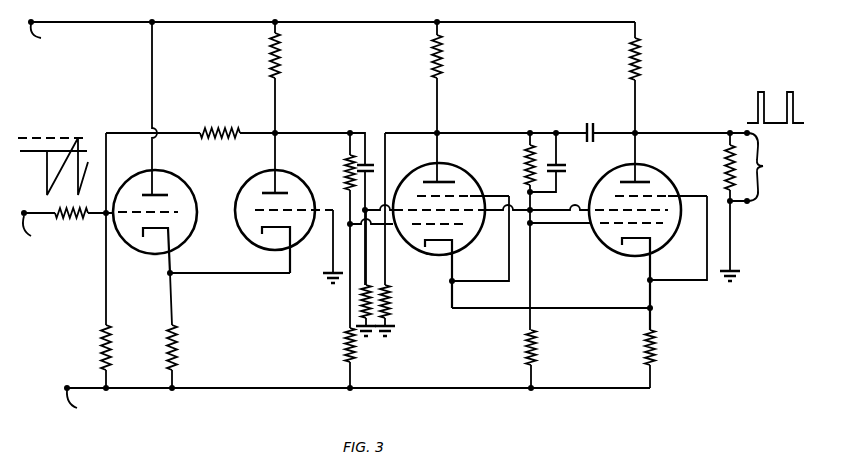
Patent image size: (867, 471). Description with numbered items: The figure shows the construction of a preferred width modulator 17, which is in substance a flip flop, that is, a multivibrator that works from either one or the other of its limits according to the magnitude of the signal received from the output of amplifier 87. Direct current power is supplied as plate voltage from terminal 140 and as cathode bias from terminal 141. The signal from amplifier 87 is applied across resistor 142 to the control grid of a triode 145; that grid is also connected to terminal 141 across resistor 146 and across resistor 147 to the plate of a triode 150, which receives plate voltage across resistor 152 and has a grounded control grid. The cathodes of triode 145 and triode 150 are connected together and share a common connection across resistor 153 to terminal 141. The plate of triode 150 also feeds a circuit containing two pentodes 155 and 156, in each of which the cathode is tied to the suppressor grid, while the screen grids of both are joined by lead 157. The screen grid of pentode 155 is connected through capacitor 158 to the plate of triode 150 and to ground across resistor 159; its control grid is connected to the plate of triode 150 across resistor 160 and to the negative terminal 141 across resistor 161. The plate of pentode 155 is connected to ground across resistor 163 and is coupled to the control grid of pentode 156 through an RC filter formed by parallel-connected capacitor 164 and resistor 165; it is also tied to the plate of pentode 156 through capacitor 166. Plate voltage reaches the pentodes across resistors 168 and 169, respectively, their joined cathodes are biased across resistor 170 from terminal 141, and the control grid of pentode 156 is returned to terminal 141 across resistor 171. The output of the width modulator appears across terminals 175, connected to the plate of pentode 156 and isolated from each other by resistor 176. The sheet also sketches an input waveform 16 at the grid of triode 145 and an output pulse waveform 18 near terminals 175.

The terminal 140 is at (33, 20).
The terminal 141 is at (66, 386).
The resistor 142 is at (68, 218).
The triode 145 is at (144, 169).
The resistor 146 is at (101, 345).
The resistor 147 is at (222, 127).
The triode 150 is at (261, 169).
The resistor 152 is at (282, 43).
The resistor 153 is at (179, 341).
The pentode 155 is at (472, 178).
The pentode 156 is at (658, 171).
The lead 157 is at (576, 213).
The capacitor 158 is at (376, 160).
The resistor 159 is at (360, 302).
The resistor 160 is at (346, 160).
The resistor 161 is at (357, 354).
The resistor 163 is at (392, 299).
The capacitor 164 is at (566, 164).
The resistor 165 is at (526, 161).
The capacitor 166 is at (588, 121).
The resistor 168 is at (447, 44).
The resistor 169 is at (641, 47).
The resistor 170 is at (656, 349).
The resistor 171 is at (539, 355).
The terminals 175 is at (771, 167).
The resistor 176 is at (728, 160).
The input sawtooth waveform 16 is at (48, 172).
The width modulator 17 is at (481, 389).
The output pulse waveform 18 is at (767, 104).
The amplifier 87 is at (35, 241).